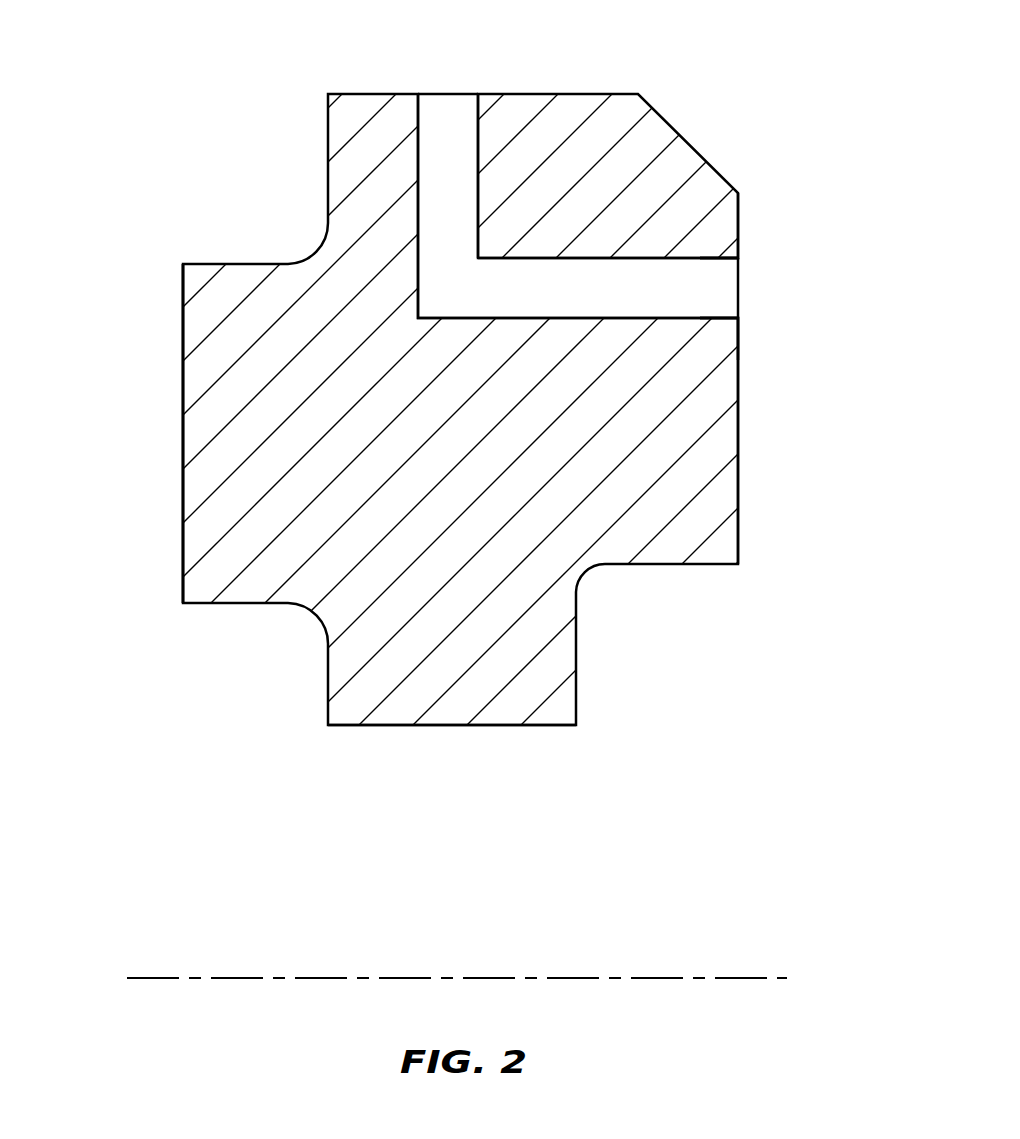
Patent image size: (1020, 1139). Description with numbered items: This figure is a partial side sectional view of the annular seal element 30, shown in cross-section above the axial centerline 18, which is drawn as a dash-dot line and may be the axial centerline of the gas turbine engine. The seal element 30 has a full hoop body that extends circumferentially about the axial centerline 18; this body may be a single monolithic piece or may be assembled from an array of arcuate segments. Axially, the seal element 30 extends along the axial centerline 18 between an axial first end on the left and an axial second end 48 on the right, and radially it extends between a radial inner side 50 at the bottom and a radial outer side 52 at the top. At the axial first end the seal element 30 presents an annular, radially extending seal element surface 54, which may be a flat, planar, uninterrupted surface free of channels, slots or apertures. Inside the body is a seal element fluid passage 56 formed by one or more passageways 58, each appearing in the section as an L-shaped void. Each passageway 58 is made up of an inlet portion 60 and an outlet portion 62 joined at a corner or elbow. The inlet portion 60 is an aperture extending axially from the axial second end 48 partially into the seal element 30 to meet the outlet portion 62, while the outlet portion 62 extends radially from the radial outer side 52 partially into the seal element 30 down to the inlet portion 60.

The seal element 30 is at (186, 103).
The radial outer side 52 is at (490, 94).
The outlet portion 62 is at (432, 104).
The inlet portion 60 is at (714, 300).
The seal element fluid passage 56 is at (752, 275).
The passageway 58 is at (719, 288).
The axial second end 48 is at (738, 411).
The seal element surface 54 is at (183, 452).
The radial inner side 50 is at (436, 726).
The axial centerline 18 is at (750, 975).